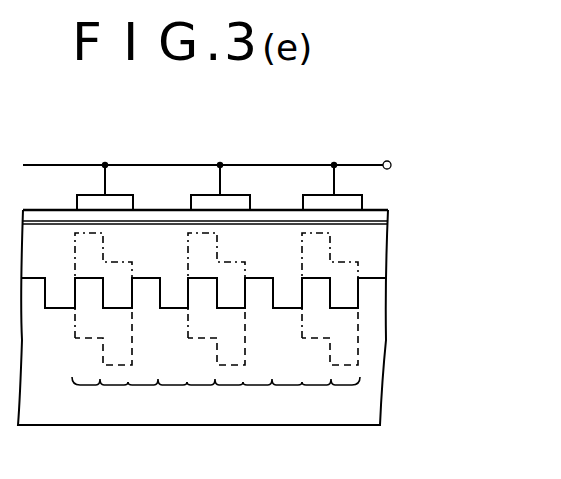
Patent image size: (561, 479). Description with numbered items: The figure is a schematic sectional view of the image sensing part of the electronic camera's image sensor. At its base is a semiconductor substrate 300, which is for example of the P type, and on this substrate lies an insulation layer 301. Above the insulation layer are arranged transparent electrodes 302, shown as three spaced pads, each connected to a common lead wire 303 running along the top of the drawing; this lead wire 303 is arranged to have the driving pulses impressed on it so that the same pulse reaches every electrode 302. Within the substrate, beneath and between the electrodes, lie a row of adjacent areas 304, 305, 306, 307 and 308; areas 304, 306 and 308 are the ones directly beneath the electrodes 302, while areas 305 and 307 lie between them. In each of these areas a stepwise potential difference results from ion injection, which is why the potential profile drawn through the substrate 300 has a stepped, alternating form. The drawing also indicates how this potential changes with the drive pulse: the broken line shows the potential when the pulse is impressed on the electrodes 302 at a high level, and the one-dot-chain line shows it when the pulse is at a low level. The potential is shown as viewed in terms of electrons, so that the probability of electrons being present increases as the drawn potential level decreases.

The semiconductor substrate 300 is at (380, 325).
The insulation layer 301 is at (383, 203).
The transparent electrodes 302 is at (306, 195).
The lead wire 303 is at (389, 161).
The area 304 is at (100, 400).
The area 305 is at (157, 401).
The area 306 is at (215, 401).
The area 307 is at (272, 401).
The area 308 is at (331, 400).